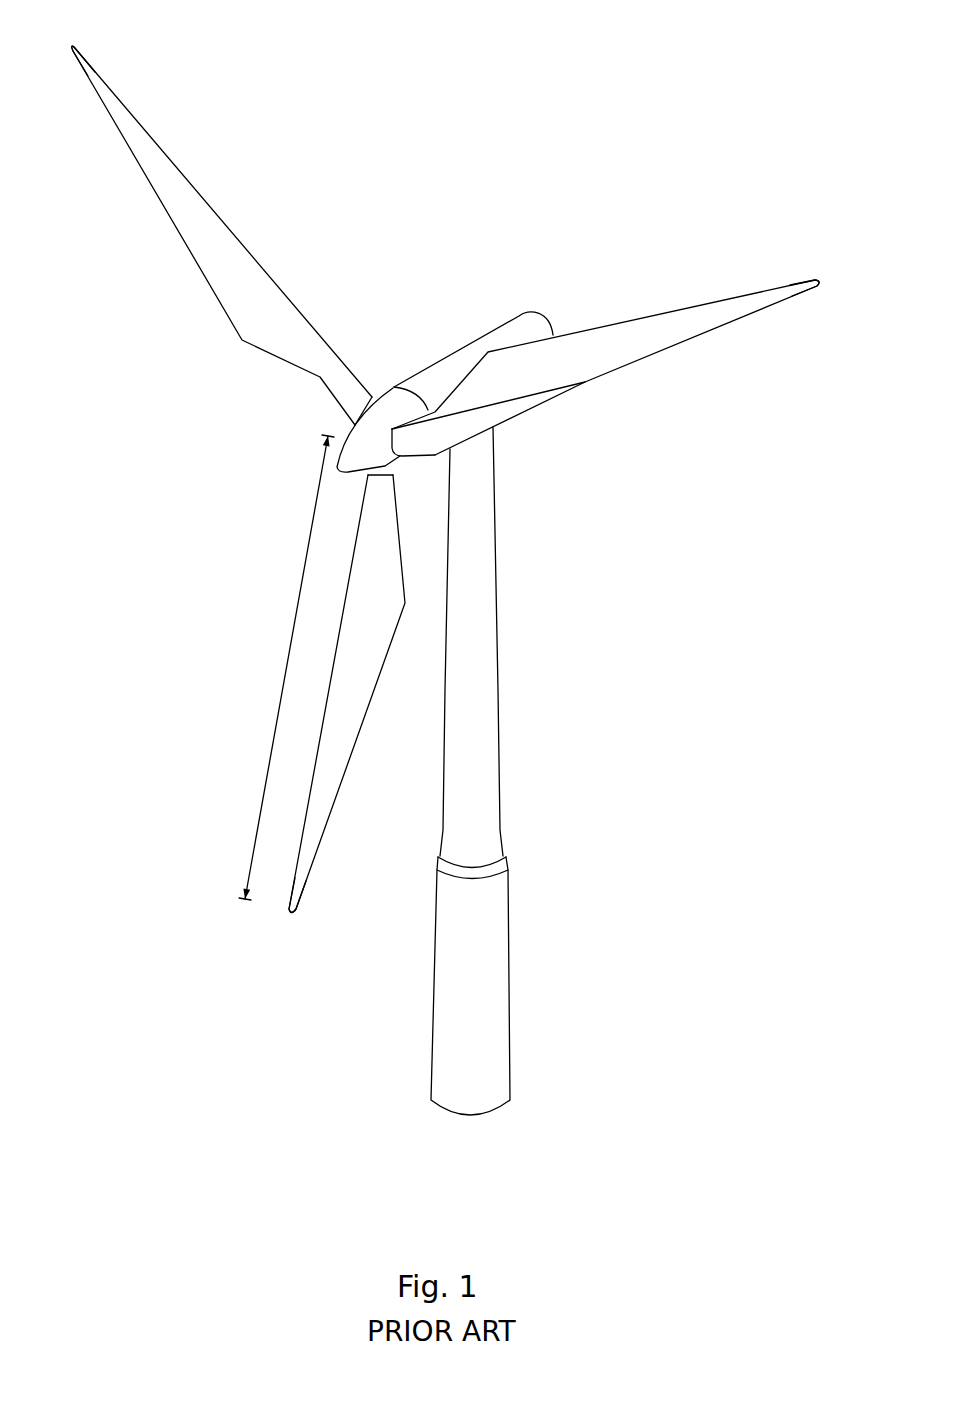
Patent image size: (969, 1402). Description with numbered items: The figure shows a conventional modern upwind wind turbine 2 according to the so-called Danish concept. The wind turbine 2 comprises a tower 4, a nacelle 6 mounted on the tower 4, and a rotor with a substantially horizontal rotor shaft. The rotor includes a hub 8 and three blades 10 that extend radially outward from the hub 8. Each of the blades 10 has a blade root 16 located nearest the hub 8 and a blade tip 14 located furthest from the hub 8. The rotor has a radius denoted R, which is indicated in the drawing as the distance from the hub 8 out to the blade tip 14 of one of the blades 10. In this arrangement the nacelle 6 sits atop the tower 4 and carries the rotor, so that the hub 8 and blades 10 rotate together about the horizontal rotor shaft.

The wind turbine 2 is at (594, 717).
The tower 4 is at (483, 637).
The nacelle 6 is at (458, 363).
The hub 8 is at (357, 431).
The blades 10 is at (227, 273).
The blade tip 14 is at (113, 98).
The blade root 16 is at (358, 396).
The radius R is at (286, 667).